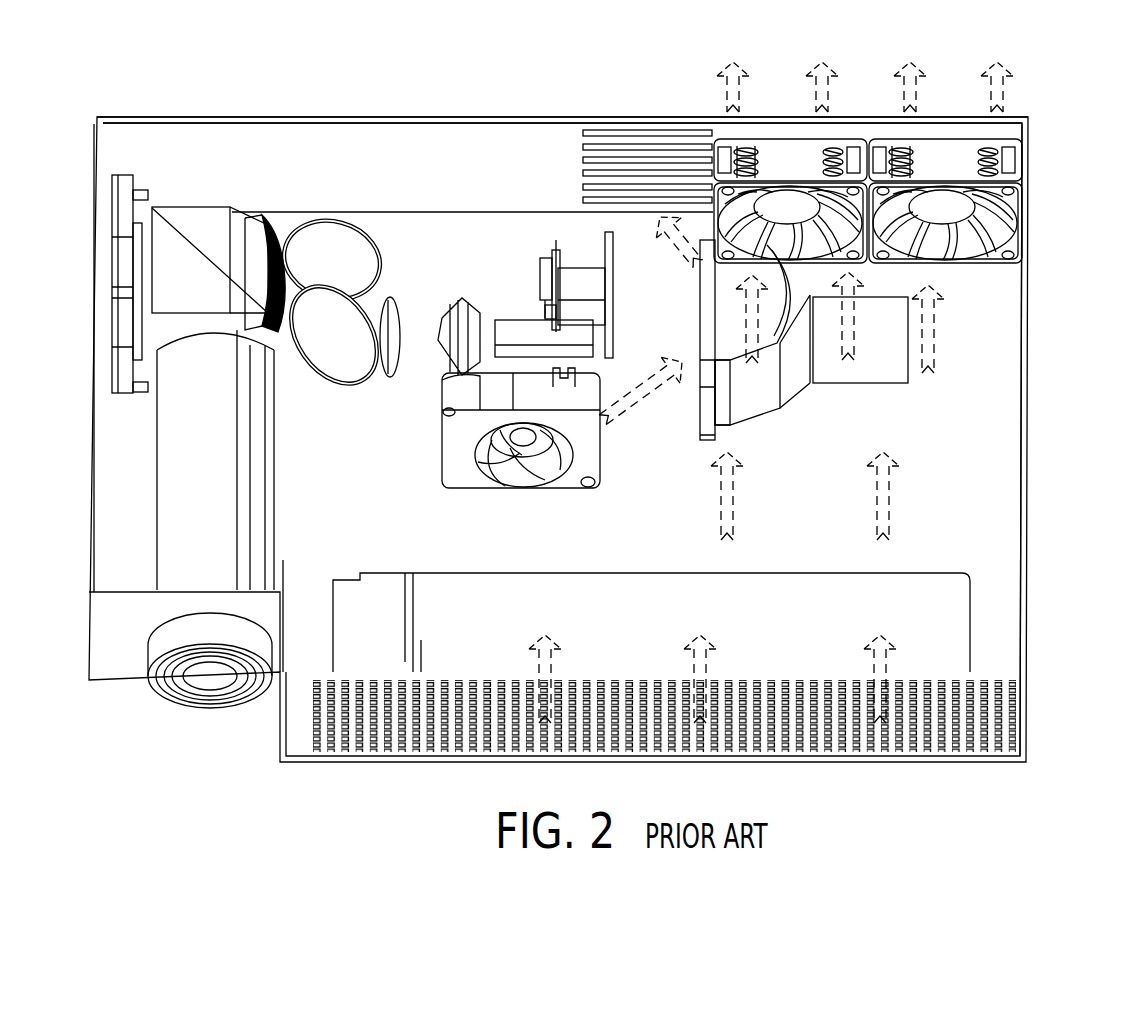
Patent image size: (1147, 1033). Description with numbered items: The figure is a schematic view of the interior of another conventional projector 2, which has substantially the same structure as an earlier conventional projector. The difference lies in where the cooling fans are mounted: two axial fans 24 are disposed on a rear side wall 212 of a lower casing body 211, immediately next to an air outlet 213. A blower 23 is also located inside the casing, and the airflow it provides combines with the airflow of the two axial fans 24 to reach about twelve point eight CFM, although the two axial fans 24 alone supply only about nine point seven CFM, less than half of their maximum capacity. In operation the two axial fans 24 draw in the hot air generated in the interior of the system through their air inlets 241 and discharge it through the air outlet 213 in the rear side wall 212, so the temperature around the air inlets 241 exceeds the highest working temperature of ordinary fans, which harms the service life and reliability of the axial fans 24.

The conventional projector 2 is at (611, 393).
The lower casing body 211 is at (1070, 393).
The rear side wall 212 is at (538, 90).
The air outlet 213 is at (677, 150).
The blower 23 is at (493, 393).
The axial fans 24 is at (873, 186).
The air inlets 241 is at (873, 245).